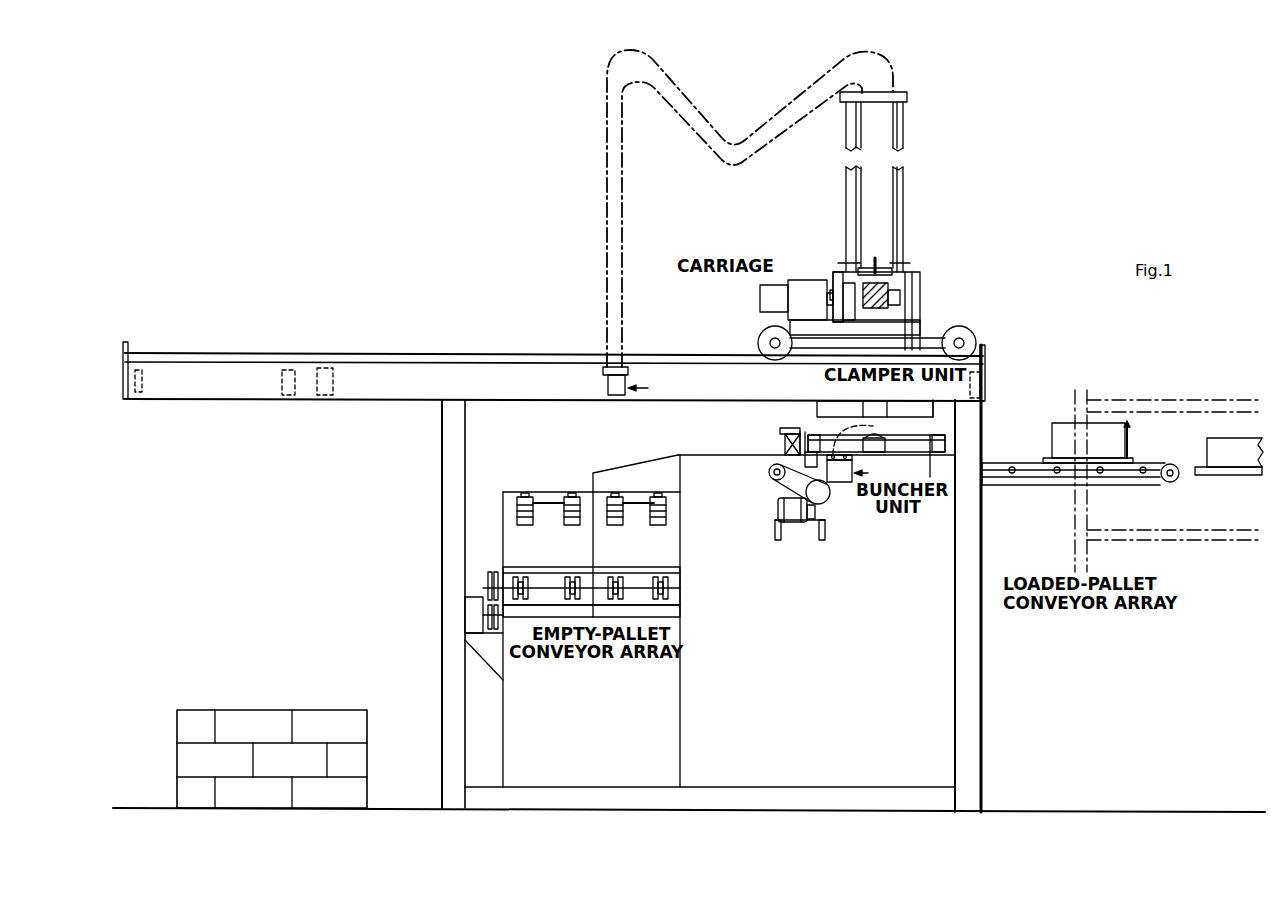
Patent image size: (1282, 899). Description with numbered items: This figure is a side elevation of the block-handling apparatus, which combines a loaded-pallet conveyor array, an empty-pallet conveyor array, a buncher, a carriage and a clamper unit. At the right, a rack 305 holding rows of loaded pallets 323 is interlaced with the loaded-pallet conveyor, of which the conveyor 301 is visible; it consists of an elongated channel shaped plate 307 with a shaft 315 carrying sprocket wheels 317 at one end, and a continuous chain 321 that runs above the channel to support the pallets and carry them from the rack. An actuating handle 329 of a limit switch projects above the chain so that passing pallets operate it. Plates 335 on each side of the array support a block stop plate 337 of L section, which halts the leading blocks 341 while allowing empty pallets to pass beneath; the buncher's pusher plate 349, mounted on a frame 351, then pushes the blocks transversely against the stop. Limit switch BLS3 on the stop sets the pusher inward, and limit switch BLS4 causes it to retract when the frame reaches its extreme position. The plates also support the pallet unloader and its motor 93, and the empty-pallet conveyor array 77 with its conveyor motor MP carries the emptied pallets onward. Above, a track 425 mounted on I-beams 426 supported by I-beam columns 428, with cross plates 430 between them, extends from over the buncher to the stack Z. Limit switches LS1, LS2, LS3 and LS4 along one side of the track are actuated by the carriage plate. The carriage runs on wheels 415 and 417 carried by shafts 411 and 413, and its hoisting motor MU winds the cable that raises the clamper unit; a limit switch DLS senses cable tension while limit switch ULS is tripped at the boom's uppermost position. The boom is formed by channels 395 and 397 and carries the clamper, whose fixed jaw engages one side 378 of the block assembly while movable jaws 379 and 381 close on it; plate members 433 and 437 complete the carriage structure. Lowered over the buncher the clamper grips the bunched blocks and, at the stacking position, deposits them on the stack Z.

The stack Z is at (283, 720).
The I-beam columns 428 is at (443, 660).
The empty-pallet conveyor array 77 is at (573, 556).
The empty pallet conveyor motor MP is at (475, 590).
The track 425 is at (558, 354).
The I-beams 426 is at (556, 400).
The cross plates 430 is at (124, 346).
The limit switch LS1 is at (333, 382).
The limit switch LS2 is at (283, 382).
The limit switch LS3 is at (142, 382).
The limit switch LS4 is at (994, 381).
The channel 395 is at (847, 187).
The channel 397 is at (935, 192).
The limit switch ULS is at (835, 255).
The limit switch DLS is at (914, 256).
The hoisting motor MU is at (796, 300).
The wheels 415 is at (766, 328).
The wheel guide 437 is at (722, 337).
The shaft 411 is at (778, 352).
The wheels 417 is at (967, 332).
The carriage frame plate 433 is at (935, 335).
The shaft 413 is at (962, 343).
The side of block assembly 378 is at (895, 386).
The movable clamping jaw 379 is at (845, 408).
The movable clamping jaw 381 is at (904, 408).
The pusher plate 349 is at (945, 437).
The frame 351 is at (901, 471).
The block stop plate 337 is at (800, 432).
The limit switch BLS3 is at (787, 450).
The limit switch BLS4 is at (805, 457).
The motor 93 is at (792, 510).
The plate 335 is at (737, 547).
The conveyor 301 is at (1023, 478).
The chain 321 is at (1068, 485).
The shaft 315 is at (1174, 474).
The sprocket wheels 317 is at (1168, 483).
The actuating handle 329 is at (990, 458).
The channel shaped plate 307 is at (1122, 453).
The leading blocks 341 is at (1143, 437).
The loaded pallets 323 is at (1135, 460).
The rack 305 is at (1208, 401).